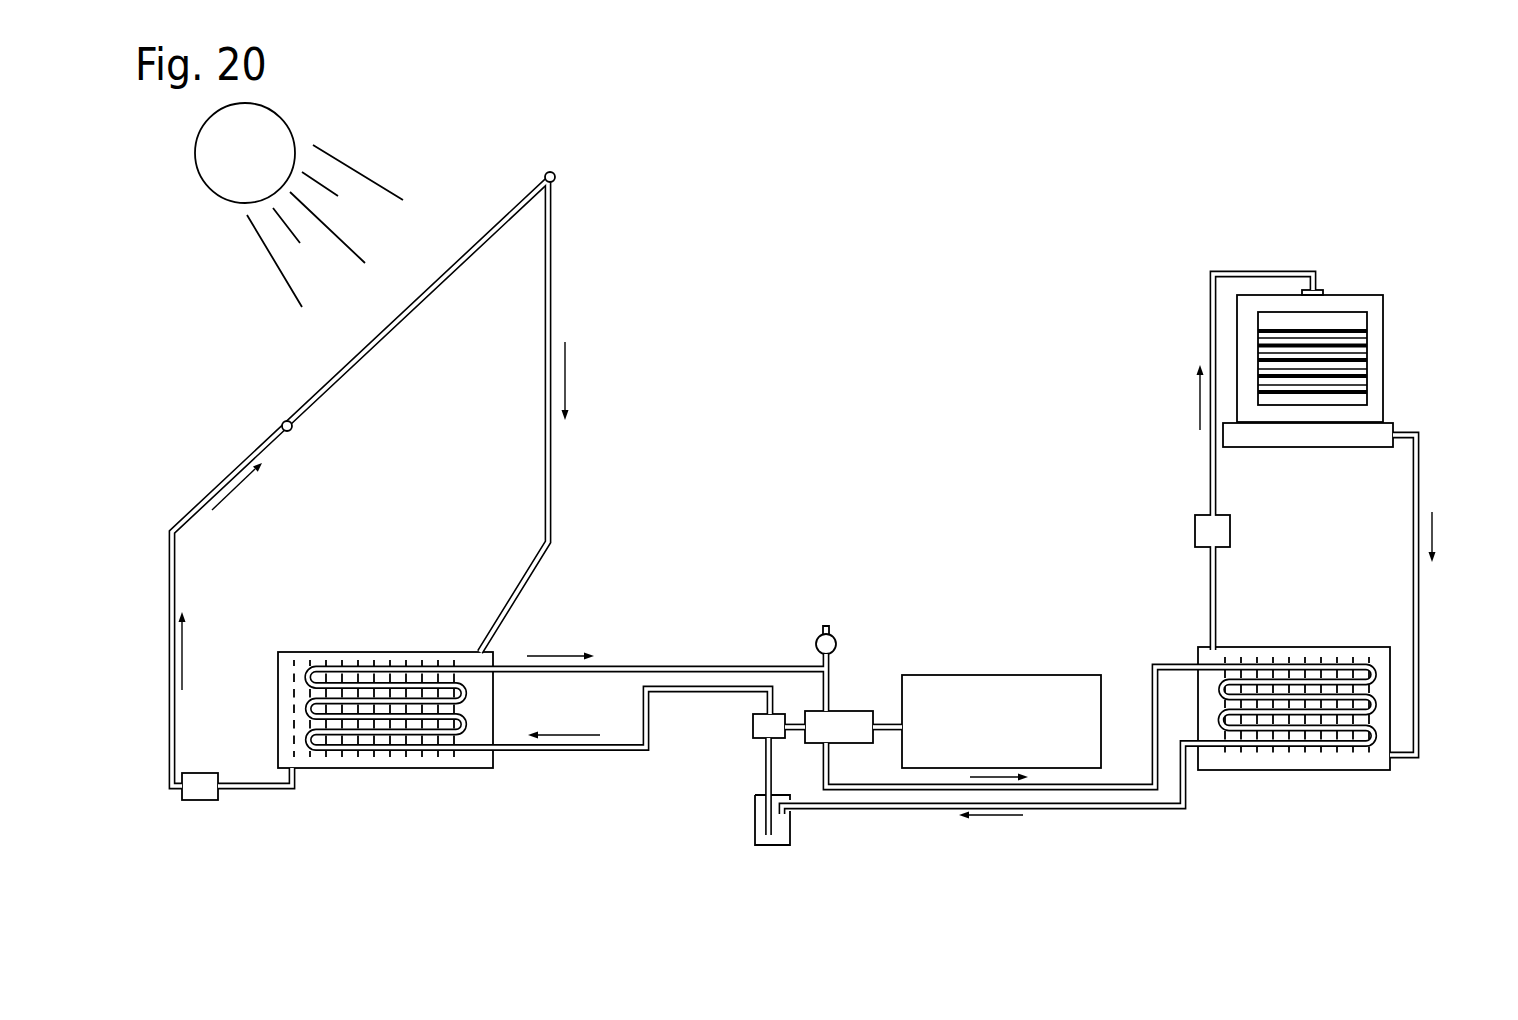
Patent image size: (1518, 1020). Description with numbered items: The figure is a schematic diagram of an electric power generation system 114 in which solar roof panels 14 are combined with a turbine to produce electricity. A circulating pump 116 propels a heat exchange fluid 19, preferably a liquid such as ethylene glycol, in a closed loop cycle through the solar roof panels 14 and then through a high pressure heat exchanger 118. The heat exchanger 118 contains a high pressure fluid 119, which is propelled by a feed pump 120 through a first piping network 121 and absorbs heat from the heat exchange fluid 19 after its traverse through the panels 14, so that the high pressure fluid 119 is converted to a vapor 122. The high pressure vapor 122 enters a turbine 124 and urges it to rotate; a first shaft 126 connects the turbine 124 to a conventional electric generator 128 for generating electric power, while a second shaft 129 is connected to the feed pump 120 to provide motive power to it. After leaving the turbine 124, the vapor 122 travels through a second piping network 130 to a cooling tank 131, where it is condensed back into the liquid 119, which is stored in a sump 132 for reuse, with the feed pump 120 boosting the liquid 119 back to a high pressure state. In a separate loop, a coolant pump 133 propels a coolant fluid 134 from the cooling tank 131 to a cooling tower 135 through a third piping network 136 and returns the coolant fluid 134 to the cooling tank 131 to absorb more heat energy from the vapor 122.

The solar roof panels 14 is at (510, 208).
The heat exchange fluid 19 is at (552, 273).
The electric power generation system 114 is at (884, 290).
The circulating pump 116 is at (200, 800).
The high pressure heat exchanger 118 is at (365, 768).
The high pressure fluid 119 is at (525, 750).
The feed pump 120 is at (752, 735).
The first piping network 121 is at (700, 667).
The vapor 122 is at (830, 668).
The turbine 124 is at (855, 715).
The first shaft 126 is at (887, 722).
The electric generator 128 is at (965, 678).
The second shaft 129 is at (798, 715).
The second piping network 130 is at (1172, 660).
The cooling tank 131 is at (1338, 648).
The sump 132 is at (780, 833).
The coolant pump 133 is at (1195, 530).
The coolant fluid 134 is at (1420, 482).
The cooling tower 135 is at (1325, 297).
The third piping network 136 is at (1210, 470).